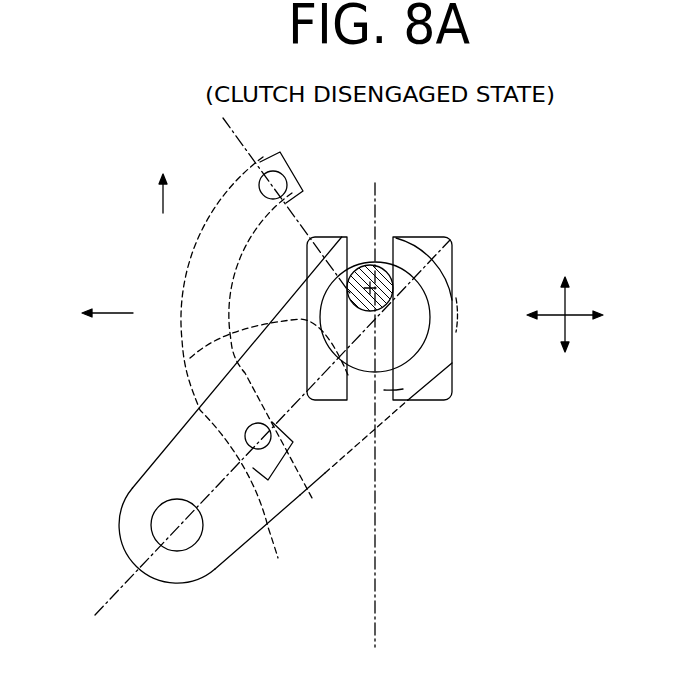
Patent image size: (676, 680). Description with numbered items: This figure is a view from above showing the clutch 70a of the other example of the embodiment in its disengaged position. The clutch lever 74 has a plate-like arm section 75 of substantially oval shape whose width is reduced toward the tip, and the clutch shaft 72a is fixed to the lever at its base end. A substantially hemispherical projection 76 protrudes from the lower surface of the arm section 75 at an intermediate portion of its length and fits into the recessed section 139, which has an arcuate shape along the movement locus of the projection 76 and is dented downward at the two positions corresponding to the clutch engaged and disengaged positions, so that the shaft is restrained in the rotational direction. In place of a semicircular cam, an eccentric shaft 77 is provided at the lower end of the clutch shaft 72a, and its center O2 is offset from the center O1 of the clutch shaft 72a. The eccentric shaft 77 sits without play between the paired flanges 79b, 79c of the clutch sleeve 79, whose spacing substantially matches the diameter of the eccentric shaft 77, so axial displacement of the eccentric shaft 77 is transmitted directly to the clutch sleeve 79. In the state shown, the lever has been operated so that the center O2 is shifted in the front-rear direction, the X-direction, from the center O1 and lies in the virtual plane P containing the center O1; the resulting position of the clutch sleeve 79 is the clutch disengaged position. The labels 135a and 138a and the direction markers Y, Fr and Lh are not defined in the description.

The clutch 70a is at (454, 411).
The clutch shaft 72a is at (400, 290).
The eccentric shaft 77 is at (393, 292).
The clutch sleeve 79 is at (403, 389).
The flange 79b is at (190, 358).
The flange 79c is at (460, 327).
The clutch lever 74 is at (230, 557).
The arm section 75 is at (308, 495).
The projection 76 is at (278, 557).
The recessed section 139 is at (290, 172).
The clutch lever arm 135a is at (180, 317).
The guide portion 138a is at (183, 365).
The center of clutch shaft O1 is at (447, 375).
The center of eccentric shaft O2 is at (328, 431).
The virtual plane P is at (377, 203).
The X-direction X is at (560, 290).
The Y direction Y is at (558, 332).
The front direction Fr is at (158, 204).
The left-hand direction Lh is at (108, 312).